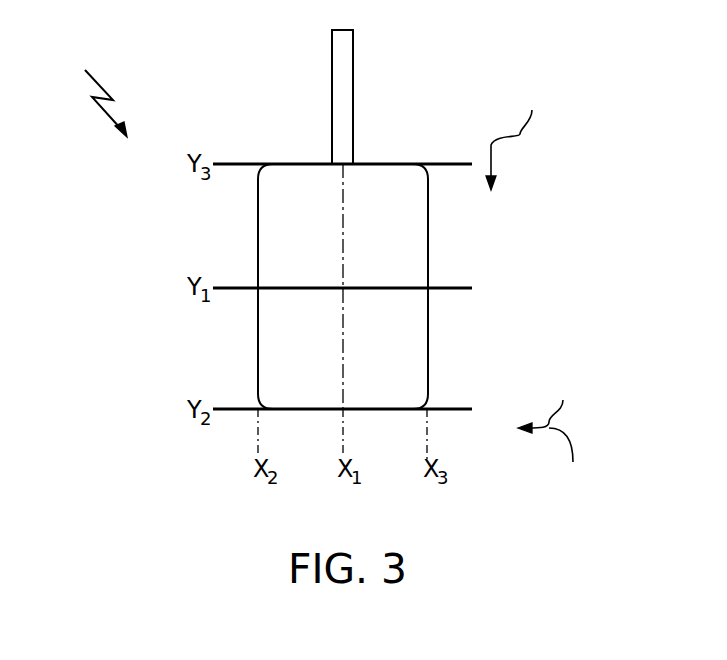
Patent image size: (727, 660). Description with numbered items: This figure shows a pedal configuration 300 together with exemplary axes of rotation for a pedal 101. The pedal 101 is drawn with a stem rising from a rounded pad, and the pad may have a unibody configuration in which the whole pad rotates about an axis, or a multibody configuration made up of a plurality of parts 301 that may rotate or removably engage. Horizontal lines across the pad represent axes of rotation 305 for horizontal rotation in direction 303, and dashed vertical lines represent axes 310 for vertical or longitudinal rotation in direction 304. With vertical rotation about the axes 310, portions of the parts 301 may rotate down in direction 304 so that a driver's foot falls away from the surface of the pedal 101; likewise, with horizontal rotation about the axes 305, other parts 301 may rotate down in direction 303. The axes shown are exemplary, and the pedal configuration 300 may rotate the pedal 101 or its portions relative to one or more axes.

The pedal configuration 300 is at (88, 90).
The pedal 101 is at (355, 65).
The parts 301 is at (447, 333).
The direction 303 is at (521, 135).
The direction 304 is at (553, 419).
The axes of rotation 305 is at (235, 406).
The axes 310 is at (457, 450).